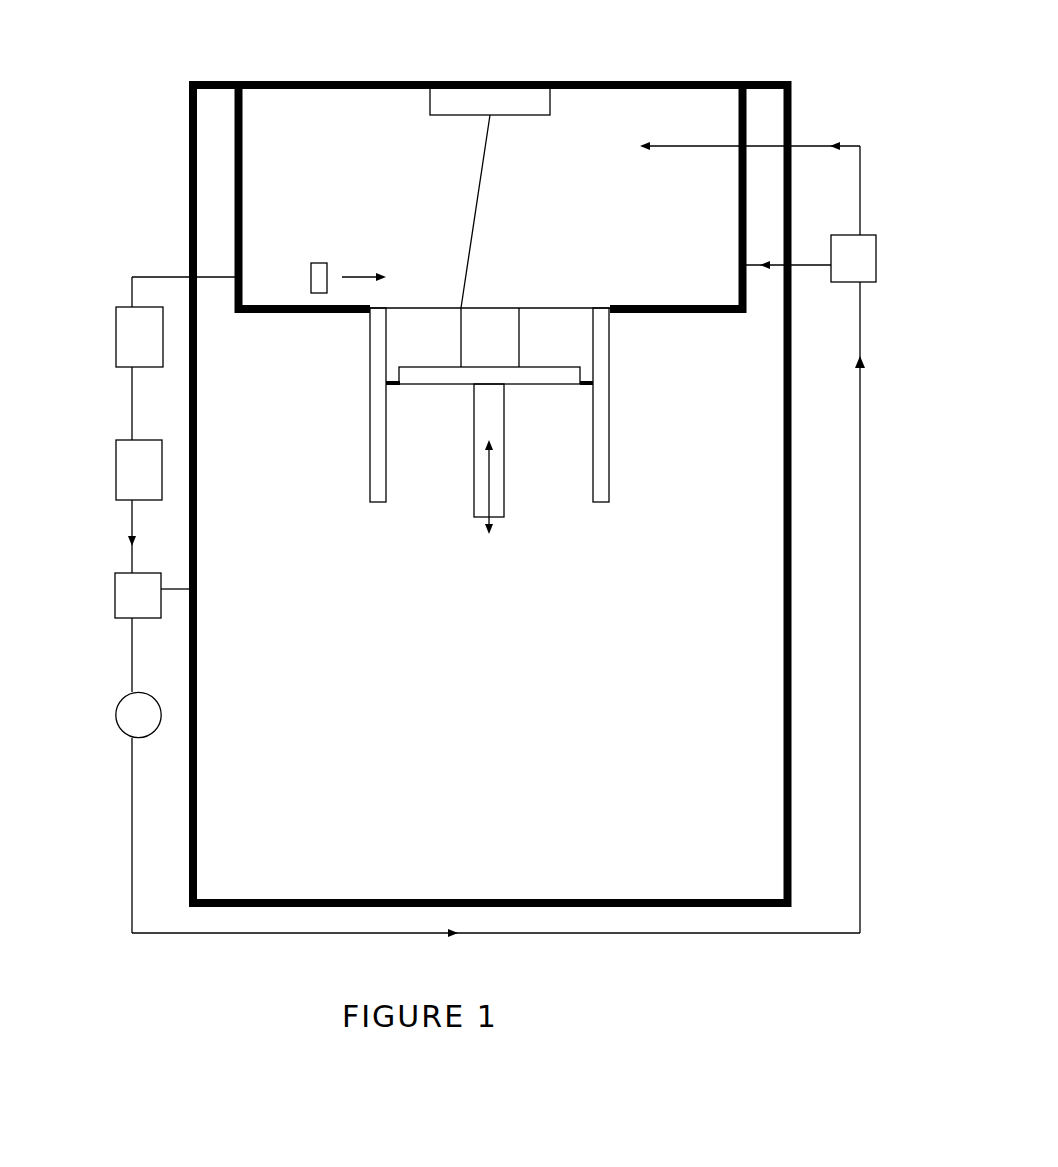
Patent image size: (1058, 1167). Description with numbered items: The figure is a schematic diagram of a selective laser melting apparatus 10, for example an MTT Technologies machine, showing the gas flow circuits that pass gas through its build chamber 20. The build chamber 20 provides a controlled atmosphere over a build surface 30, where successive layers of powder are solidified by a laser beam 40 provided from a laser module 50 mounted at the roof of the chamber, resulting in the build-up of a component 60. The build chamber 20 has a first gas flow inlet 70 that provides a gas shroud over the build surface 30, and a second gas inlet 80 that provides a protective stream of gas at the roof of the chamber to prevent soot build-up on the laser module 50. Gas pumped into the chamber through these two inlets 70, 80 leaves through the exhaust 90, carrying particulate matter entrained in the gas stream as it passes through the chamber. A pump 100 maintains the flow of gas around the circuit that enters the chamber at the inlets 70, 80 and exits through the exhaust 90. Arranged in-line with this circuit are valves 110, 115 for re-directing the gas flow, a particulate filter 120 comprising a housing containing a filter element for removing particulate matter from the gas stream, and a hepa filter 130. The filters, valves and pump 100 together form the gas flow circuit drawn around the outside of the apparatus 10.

The selective laser melting apparatus 10 is at (795, 64).
The build chamber 20 is at (491, 197).
The build surface 30 is at (532, 307).
The laser beam 40 is at (485, 166).
The laser module 50 is at (490, 90).
The component 60 is at (490, 337).
The first gas flow inlet 70 is at (738, 267).
The second gas inlet 80 is at (737, 147).
The exhaust 90 is at (240, 277).
The pump 100 is at (114, 710).
The valve 110 is at (120, 595).
The valve 115 is at (876, 256).
The particulate filter 120 is at (120, 336).
The hepa filter 130 is at (122, 470).